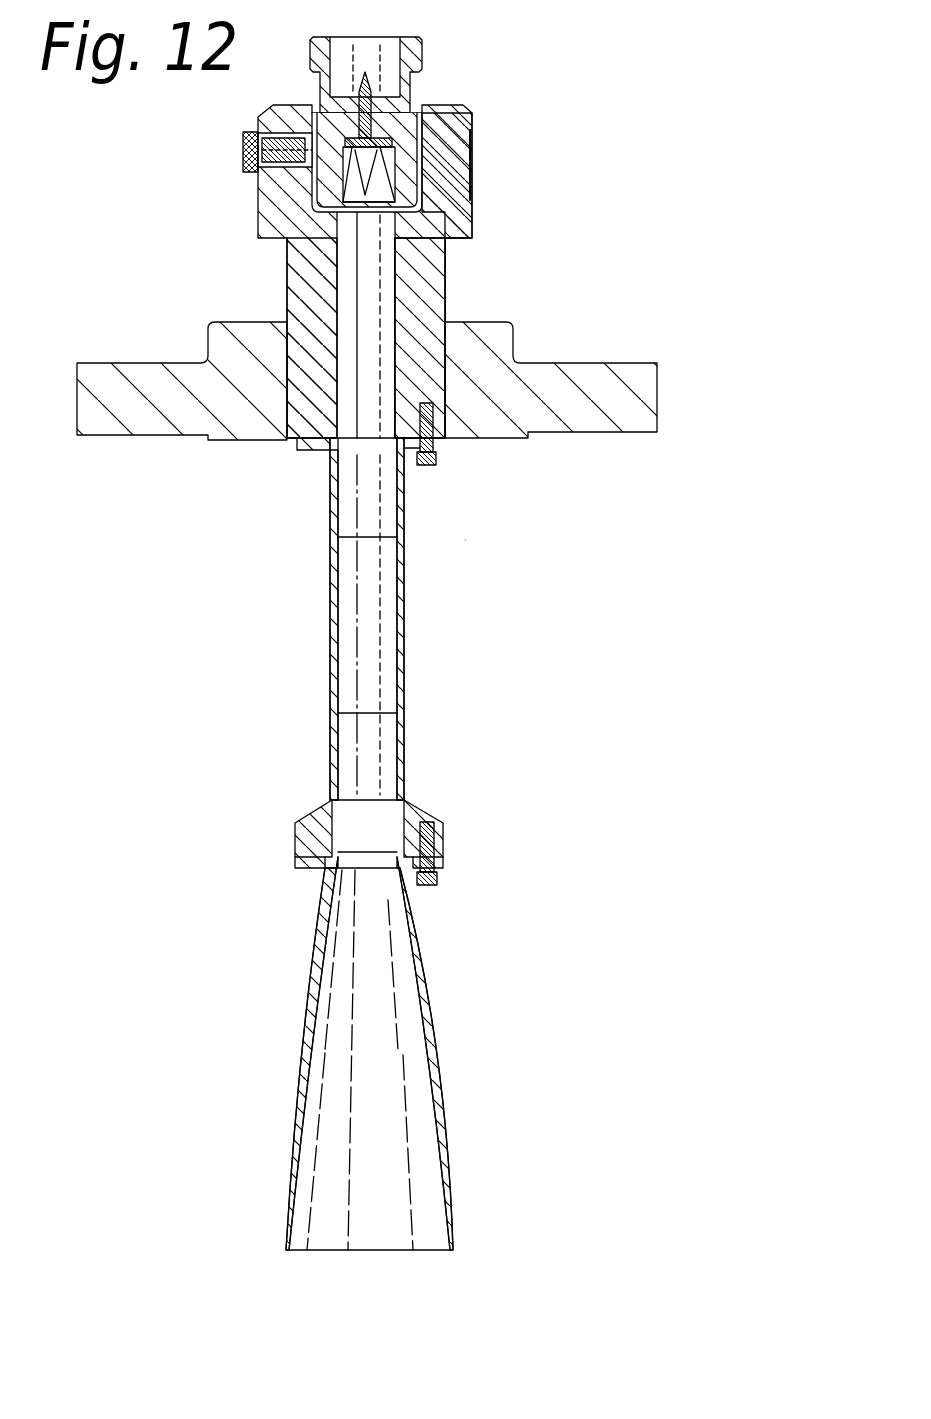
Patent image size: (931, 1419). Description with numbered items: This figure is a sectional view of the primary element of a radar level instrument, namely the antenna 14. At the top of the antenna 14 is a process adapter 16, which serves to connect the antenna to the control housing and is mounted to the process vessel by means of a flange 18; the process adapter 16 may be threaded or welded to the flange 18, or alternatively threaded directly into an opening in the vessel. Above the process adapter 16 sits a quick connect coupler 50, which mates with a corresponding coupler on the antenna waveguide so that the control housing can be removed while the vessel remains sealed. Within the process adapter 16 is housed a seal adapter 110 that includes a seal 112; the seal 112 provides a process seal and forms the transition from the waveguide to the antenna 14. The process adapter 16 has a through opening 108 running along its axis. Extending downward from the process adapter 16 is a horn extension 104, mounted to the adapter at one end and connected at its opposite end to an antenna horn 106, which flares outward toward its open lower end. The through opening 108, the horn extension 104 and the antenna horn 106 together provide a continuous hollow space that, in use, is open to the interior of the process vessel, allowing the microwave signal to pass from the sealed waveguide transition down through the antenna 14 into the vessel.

The antenna 14 is at (455, 541).
The process adapter 16 is at (446, 262).
The flange 18 is at (590, 370).
The quick connect coupler 50 is at (420, 60).
The horn extension 104 is at (407, 630).
The antenna horn 106 is at (420, 990).
The through opening 108 is at (287, 262).
The seal adapter 110 is at (398, 107).
The seal 112 is at (473, 120).